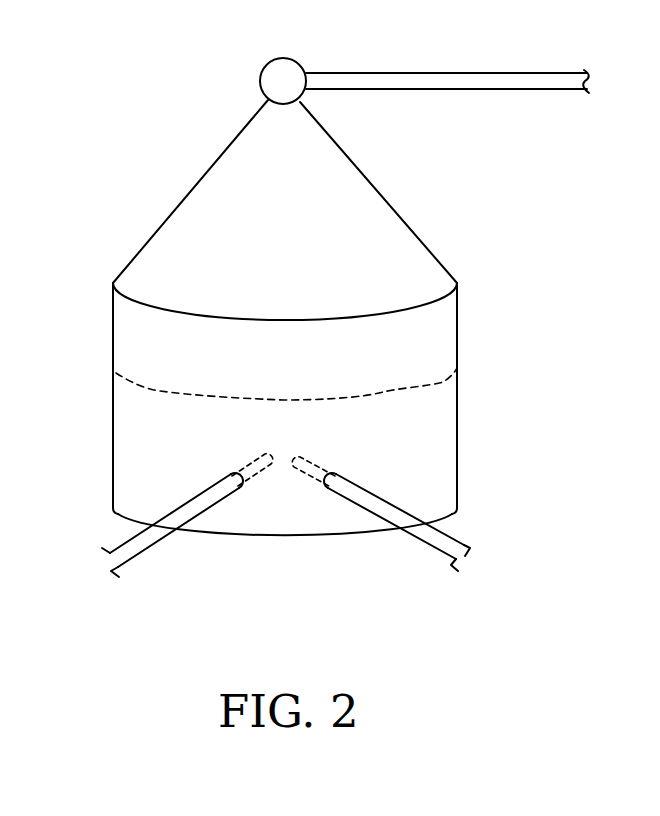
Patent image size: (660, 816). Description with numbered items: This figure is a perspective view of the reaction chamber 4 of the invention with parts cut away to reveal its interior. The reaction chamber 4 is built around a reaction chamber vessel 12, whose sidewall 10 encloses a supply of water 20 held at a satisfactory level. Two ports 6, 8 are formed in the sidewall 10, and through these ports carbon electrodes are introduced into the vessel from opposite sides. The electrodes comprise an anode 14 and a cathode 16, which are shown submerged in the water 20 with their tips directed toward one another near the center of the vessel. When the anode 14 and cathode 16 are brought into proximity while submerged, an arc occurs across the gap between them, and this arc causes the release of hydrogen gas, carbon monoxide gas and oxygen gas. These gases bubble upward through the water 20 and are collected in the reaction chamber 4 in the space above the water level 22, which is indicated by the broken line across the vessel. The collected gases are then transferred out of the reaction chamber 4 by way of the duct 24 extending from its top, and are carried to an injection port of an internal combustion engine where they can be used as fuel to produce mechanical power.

The reaction chamber 4 is at (524, 301).
The port 6 is at (228, 492).
The port 8 is at (336, 483).
The sidewall 10 is at (457, 478).
The reaction chamber vessel 12 is at (113, 395).
The anode 14 is at (247, 466).
The cathode 16 is at (312, 478).
The water 20 is at (417, 422).
The water level 22 is at (318, 397).
The duct 24 is at (483, 73).